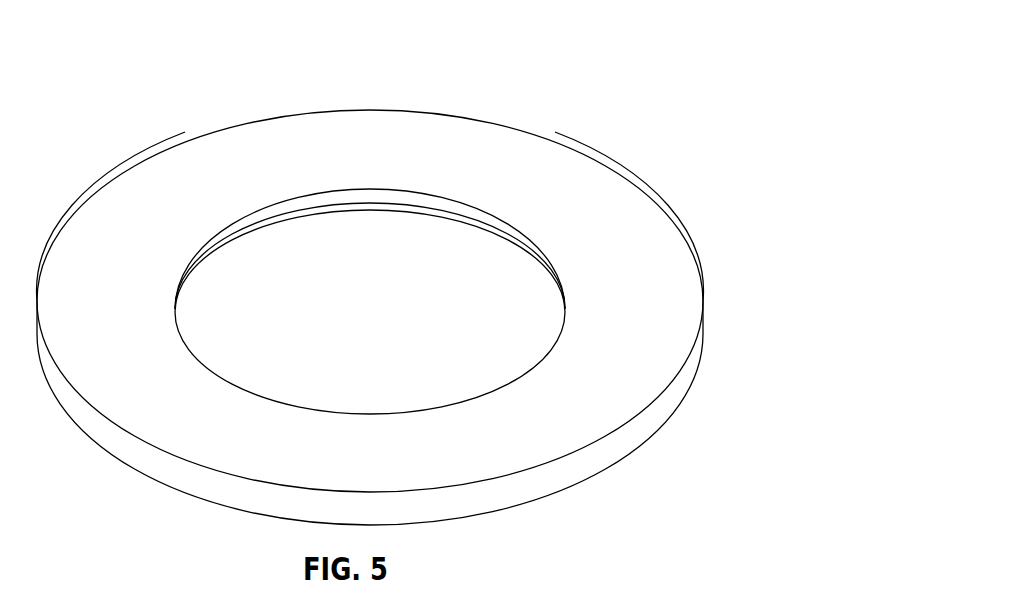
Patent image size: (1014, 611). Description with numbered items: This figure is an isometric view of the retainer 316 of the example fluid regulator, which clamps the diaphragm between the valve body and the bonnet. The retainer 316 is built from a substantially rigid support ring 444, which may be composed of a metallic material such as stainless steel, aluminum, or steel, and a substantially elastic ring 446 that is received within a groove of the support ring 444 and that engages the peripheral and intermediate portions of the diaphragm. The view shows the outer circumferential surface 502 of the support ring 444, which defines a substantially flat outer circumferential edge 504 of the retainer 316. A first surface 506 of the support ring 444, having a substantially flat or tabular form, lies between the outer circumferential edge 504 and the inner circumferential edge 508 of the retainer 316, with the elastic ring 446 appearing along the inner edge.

The retainer 316 is at (172, 56).
The support ring 444 is at (495, 125).
The elastic ring 446 is at (325, 212).
The outer circumferential surface 502 is at (566, 470).
The outer circumferential edge 504 is at (620, 176).
The first surface 506 is at (212, 170).
The inner circumferential edge 508 is at (489, 391).